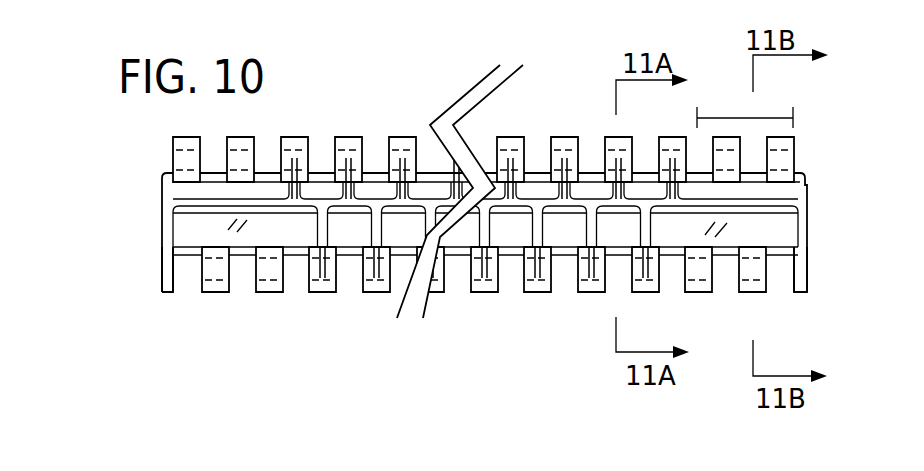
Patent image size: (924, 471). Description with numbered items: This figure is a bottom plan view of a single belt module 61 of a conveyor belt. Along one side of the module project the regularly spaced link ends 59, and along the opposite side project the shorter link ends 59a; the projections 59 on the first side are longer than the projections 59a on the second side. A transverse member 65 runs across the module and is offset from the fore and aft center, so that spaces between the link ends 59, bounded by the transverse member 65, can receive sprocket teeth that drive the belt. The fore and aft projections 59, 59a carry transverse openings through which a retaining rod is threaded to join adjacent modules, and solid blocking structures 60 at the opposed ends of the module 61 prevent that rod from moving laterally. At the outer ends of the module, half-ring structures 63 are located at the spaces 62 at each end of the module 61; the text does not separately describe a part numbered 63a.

The fore projection 59 is at (527, 292).
The aft projection 59a is at (415, 82).
The solid blocking structure 60 is at (162, 280).
The belt module 61 is at (822, 203).
The space at module end 62 is at (775, 118).
The half-ring structure 63 is at (689, 292).
The upper contact pad 63a is at (797, 152).
The transverse member 65 is at (185, 215).